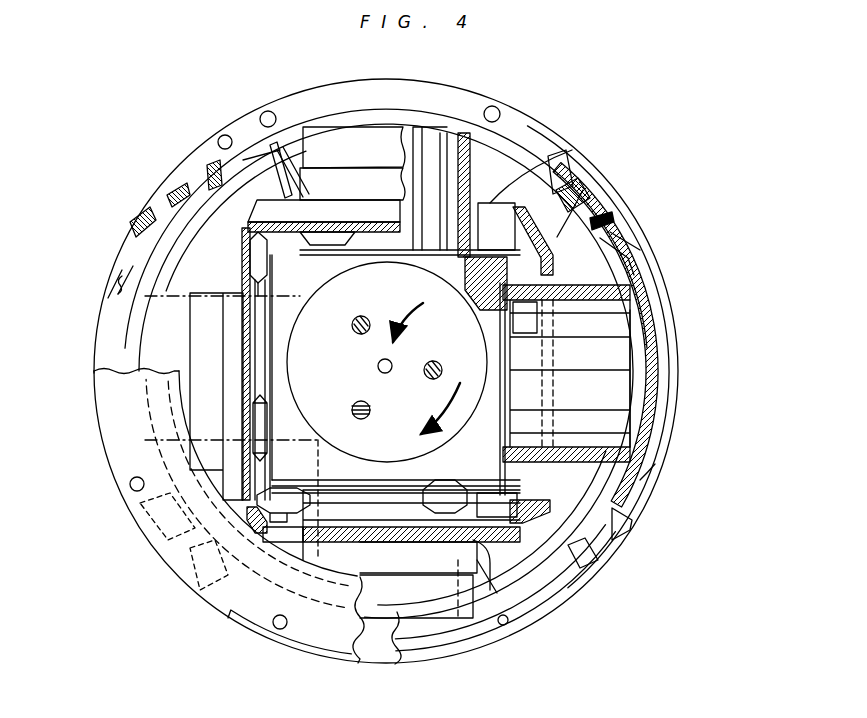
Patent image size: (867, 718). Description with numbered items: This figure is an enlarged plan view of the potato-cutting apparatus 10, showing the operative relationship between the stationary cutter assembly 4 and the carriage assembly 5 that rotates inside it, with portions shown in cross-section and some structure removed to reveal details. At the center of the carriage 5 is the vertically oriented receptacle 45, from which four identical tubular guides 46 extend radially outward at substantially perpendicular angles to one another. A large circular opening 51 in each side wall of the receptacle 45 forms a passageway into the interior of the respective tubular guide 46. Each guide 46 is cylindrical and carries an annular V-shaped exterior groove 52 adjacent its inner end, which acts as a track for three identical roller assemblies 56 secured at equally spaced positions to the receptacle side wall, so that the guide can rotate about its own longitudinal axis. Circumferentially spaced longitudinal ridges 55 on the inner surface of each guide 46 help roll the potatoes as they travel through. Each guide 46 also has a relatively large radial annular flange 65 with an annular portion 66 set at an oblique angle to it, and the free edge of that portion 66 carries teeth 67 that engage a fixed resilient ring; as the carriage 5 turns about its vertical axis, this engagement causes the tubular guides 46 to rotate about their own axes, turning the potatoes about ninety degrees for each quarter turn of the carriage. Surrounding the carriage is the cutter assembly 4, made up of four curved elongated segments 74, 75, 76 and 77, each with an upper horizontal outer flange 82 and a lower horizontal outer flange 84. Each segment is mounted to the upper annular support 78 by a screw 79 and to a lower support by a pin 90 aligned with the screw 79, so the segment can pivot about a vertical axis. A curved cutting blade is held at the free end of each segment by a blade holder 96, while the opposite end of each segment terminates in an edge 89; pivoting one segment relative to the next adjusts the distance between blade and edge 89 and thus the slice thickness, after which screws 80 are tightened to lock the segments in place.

The stationary cutter assembly 4 is at (678, 378).
The carriage assembly 5 is at (426, 361).
The apparatus 10 is at (692, 183).
The receptacle 45 is at (462, 313).
The tubular guide 46 is at (350, 160).
The circular opening 51 is at (427, 272).
The annular V-shaped exterior groove 52 is at (374, 240).
The ridges 55 is at (430, 128).
The roller assembly 56 is at (264, 260).
The radial annular flange 65 is at (528, 126).
The annular portion 66 is at (150, 212).
The teeth 67 is at (303, 207).
The curved elongated segment 74 is at (372, 660).
The curved elongated segment 75 is at (122, 284).
The curved elongated segment 76 is at (447, 82).
The curved elongated segment 77 is at (667, 420).
The upper annular support 78 is at (110, 413).
The screw 79 is at (133, 491).
The screw 80 is at (276, 630).
The upper horizontal outer flange 82 is at (494, 105).
The lower horizontal outer flange 84 is at (128, 252).
The terminal edge 89 is at (200, 190).
The pin 90 is at (646, 256).
The blade holder 96 is at (243, 162).